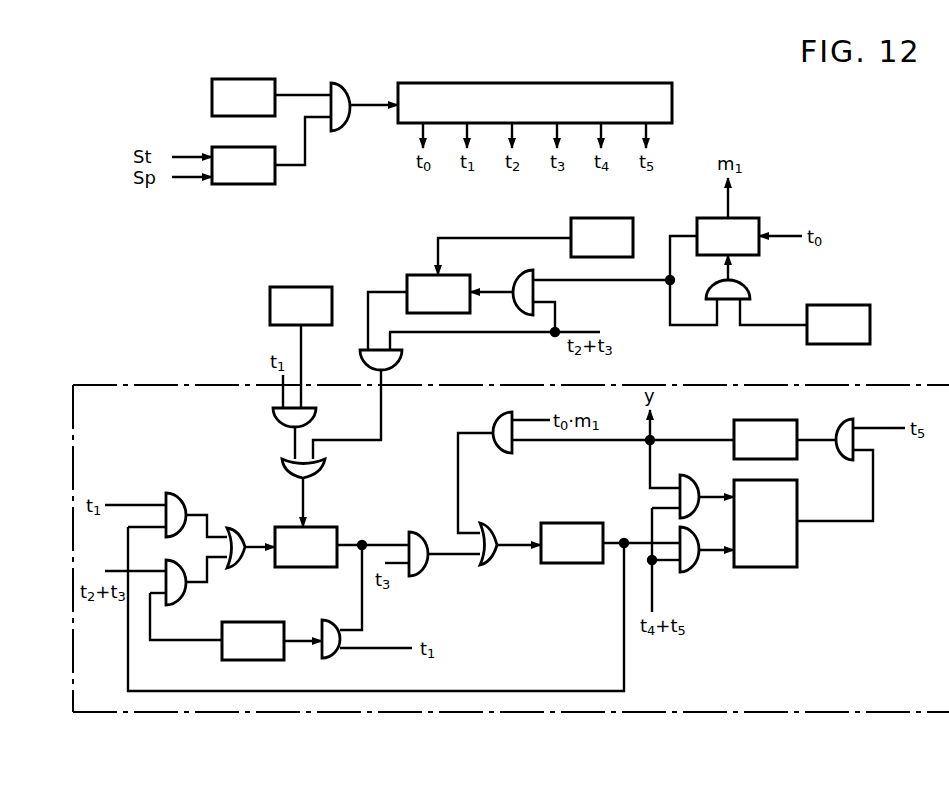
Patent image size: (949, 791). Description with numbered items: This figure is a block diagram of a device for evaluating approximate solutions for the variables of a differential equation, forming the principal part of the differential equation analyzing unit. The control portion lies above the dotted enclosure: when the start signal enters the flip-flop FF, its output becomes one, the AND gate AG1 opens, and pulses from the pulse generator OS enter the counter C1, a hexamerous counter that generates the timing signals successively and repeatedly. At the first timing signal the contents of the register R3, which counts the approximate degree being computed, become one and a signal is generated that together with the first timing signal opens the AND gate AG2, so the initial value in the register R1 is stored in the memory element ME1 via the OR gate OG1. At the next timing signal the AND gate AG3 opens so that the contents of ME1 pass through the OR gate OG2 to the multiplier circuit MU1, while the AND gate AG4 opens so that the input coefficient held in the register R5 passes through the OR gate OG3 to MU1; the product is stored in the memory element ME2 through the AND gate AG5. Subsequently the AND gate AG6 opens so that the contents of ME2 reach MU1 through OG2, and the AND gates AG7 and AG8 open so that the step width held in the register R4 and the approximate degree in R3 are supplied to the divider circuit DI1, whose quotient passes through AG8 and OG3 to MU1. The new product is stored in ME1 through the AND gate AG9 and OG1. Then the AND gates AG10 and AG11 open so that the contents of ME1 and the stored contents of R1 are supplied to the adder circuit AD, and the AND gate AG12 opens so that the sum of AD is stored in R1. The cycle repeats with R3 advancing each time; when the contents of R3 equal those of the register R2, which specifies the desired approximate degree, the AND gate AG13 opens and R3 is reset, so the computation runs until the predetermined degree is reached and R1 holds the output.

The pulse generator OS is at (243, 97).
The flip-flop FF is at (243, 165).
The AND gate AG1 is at (343, 126).
The counter C1 is at (535, 103).
The register R4 is at (602, 237).
The divider circuit DI1 is at (438, 294).
The AND gate AG7 is at (514, 281).
The register R3 is at (728, 236).
The AND gate AG13 is at (743, 286).
The register R2 is at (838, 324).
The register R5 is at (301, 306).
The AND gate AG8 is at (397, 363).
The AND gate AG4 is at (273, 418).
The OR gate OG3 is at (316, 473).
The AND gate AG3 is at (190, 494).
The OR gate OG2 is at (246, 521).
The AND gate AG6 is at (179, 599).
The multiplier circuit MU1 is at (306, 547).
The memory element ME2 is at (253, 641).
The AND gate AG5 is at (333, 659).
The AND gate AG9 is at (428, 538).
The OR gate OG1 is at (498, 517).
The memory element ME1 is at (572, 543).
The AND gate AG2 is at (496, 421).
The AND gate AG10 is at (695, 479).
The AND gate AG11 is at (697, 571).
The adder circuit AD is at (765, 523).
The register R1 is at (765, 439).
The AND gate AG12 is at (850, 419).